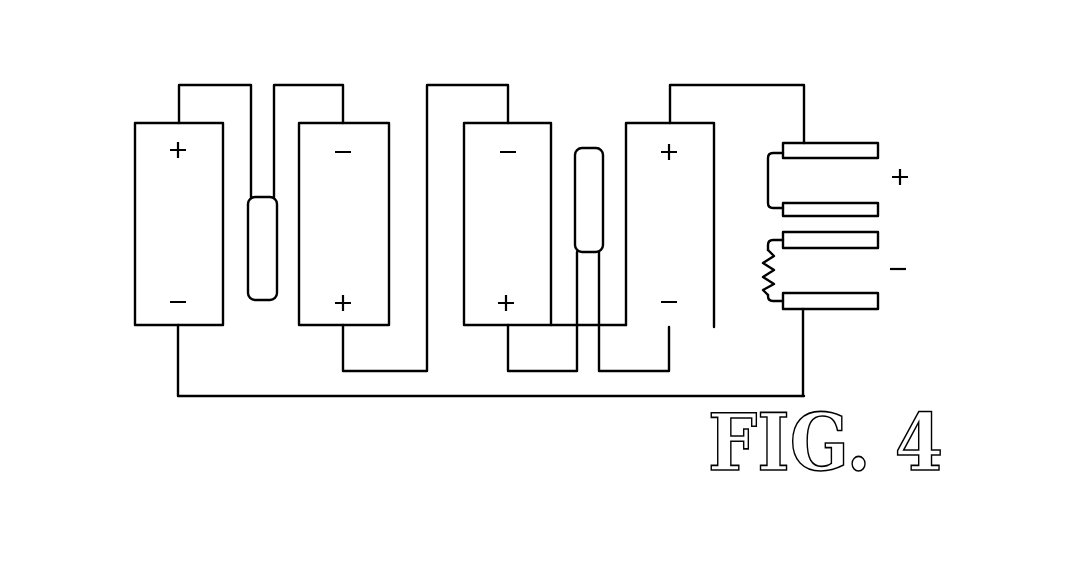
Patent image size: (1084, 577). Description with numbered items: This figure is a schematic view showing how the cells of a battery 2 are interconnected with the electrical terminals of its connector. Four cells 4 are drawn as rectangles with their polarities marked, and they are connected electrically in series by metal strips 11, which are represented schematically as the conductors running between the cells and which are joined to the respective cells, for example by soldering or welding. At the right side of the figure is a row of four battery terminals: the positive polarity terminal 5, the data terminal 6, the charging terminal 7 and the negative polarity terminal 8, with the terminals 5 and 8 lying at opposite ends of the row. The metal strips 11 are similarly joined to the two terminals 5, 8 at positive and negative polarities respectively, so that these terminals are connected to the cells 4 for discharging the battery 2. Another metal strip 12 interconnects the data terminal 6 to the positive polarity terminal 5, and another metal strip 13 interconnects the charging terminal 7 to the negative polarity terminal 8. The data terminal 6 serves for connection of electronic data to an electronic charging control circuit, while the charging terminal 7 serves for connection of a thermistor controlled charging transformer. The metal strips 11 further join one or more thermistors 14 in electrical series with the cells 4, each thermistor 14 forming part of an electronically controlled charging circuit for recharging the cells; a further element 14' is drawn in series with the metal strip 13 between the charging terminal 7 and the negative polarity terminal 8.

The battery 2 is at (178, 363).
The cells 4 is at (135, 135).
The positive polarity terminal 5 is at (855, 143).
The data terminal 6 is at (868, 207).
The charging terminal 7 is at (878, 253).
The negative polarity terminal 8 is at (850, 295).
The metal strips 11 is at (290, 85).
The metal strip 12 is at (768, 182).
The metal strip 13 is at (770, 303).
The thermistor 14 is at (425, 224).
The resistor 14' is at (748, 246).